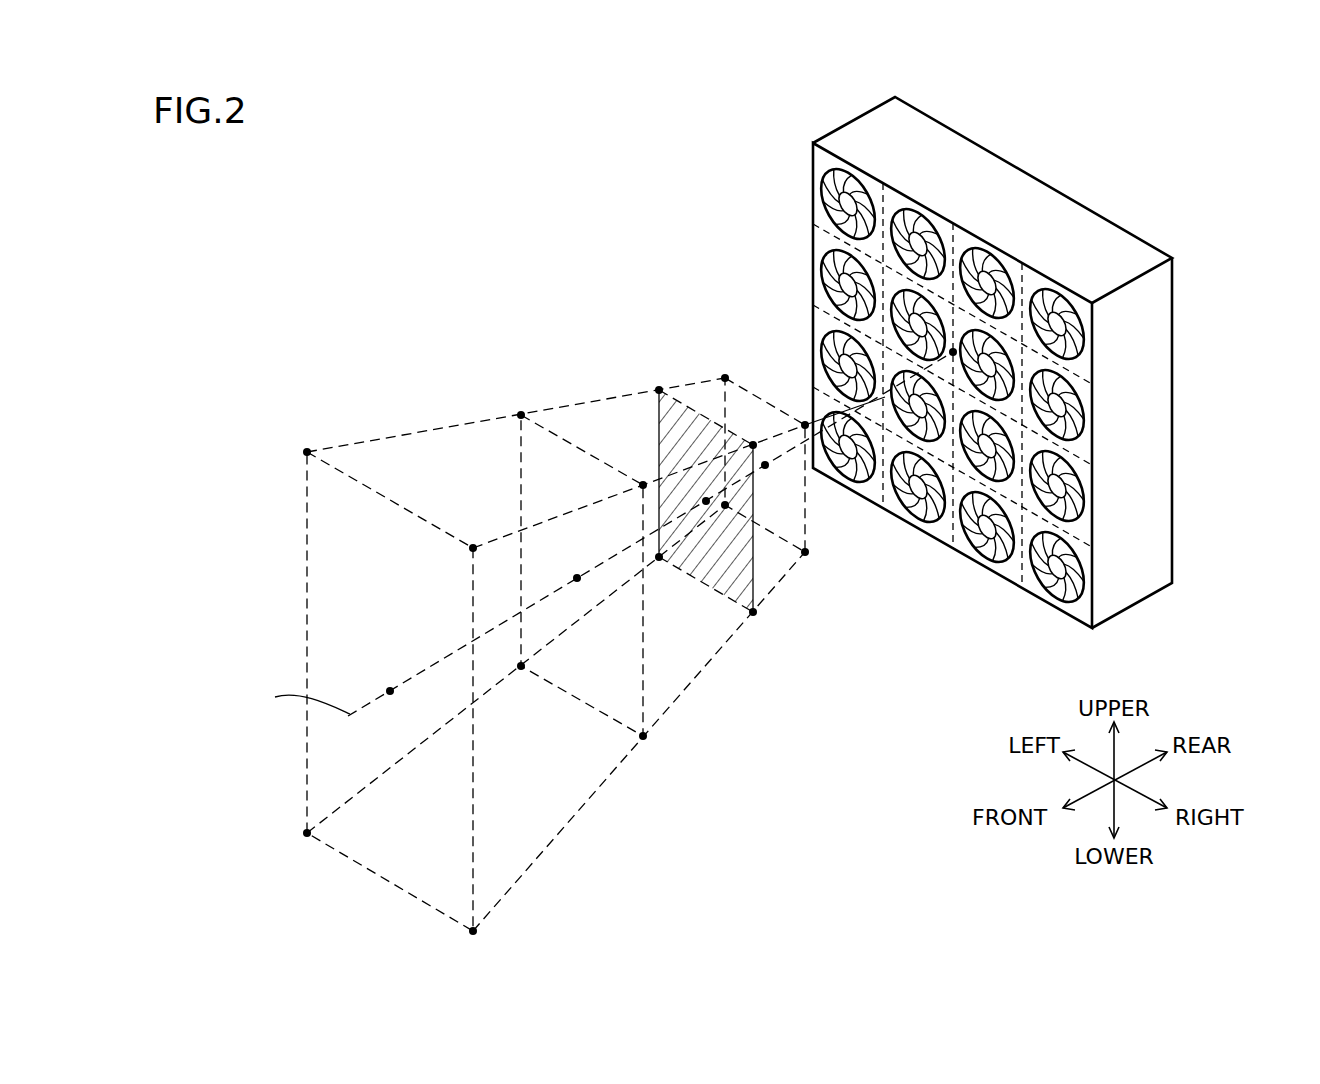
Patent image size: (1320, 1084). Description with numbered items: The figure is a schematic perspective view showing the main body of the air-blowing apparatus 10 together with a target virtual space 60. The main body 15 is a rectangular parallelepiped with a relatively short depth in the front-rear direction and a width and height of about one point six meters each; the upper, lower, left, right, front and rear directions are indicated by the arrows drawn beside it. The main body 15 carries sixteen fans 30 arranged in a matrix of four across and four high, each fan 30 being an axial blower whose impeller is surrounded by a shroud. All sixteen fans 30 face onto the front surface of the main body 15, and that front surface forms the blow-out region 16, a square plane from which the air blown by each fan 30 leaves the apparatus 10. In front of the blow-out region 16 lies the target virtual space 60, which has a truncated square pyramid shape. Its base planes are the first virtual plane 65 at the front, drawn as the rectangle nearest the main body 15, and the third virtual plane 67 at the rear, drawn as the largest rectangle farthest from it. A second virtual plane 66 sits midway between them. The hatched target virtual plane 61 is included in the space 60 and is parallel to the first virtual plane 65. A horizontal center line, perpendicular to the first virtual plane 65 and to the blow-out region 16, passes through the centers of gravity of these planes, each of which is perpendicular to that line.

The air-blowing apparatus 10 is at (838, 95).
The main body 15 is at (928, 116).
The blow-out region 16 is at (826, 160).
The fan 30 is at (868, 185).
The target virtual space 60 is at (457, 460).
The target virtual plane 61 is at (675, 430).
The first virtual plane 65 is at (790, 528).
The second virtual plane 66 is at (620, 693).
The third virtual plane 67 is at (393, 847).